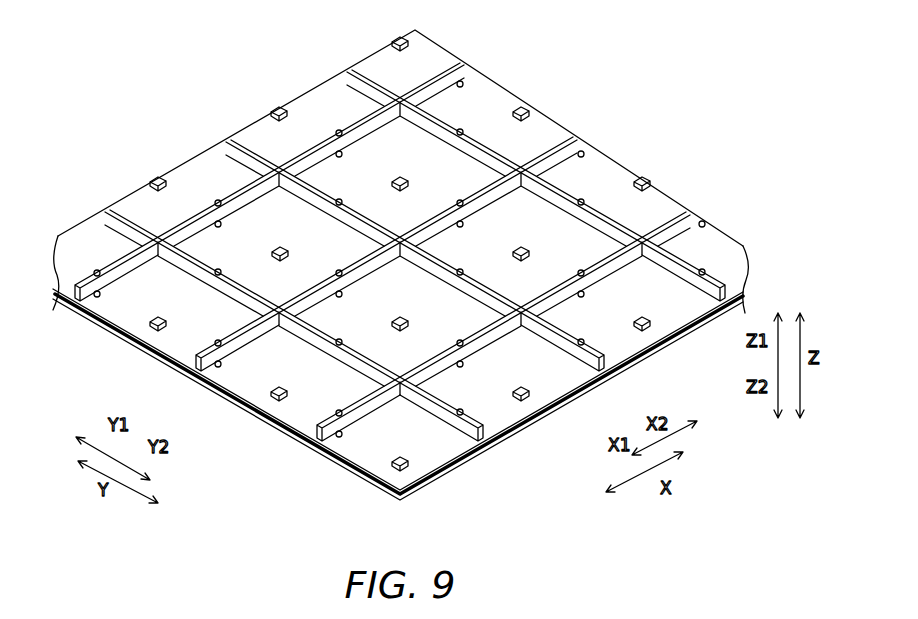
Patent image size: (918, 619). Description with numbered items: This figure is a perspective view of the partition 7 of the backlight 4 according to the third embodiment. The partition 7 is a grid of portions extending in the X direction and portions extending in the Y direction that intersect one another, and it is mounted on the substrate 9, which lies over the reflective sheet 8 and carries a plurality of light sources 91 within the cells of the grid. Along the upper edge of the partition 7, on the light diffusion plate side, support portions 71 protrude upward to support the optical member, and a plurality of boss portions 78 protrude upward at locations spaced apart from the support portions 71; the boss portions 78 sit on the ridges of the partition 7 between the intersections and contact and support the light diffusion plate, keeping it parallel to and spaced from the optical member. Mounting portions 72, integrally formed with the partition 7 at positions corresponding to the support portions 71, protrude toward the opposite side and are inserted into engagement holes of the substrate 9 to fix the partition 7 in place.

The backlight 4 is at (400, 250).
The partition 7 is at (400, 265).
The reflective sheet 8 is at (130, 344).
The substrate 9 is at (398, 262).
The support portions 71 is at (340, 131).
The mounting portions 72 is at (336, 153).
The boss portions 78 is at (463, 131).
The light sources 91 is at (403, 176).